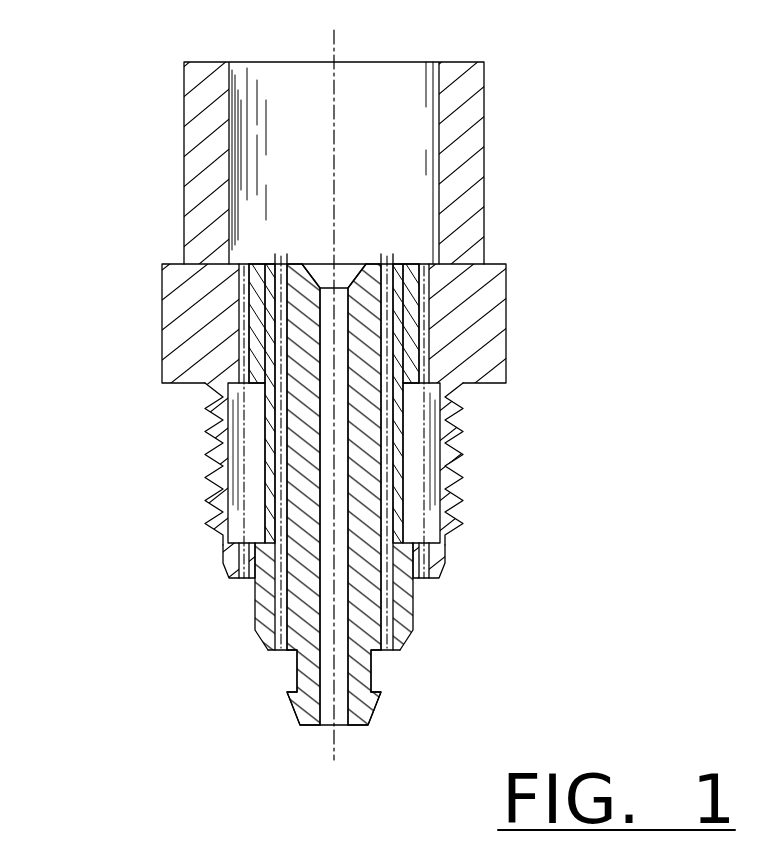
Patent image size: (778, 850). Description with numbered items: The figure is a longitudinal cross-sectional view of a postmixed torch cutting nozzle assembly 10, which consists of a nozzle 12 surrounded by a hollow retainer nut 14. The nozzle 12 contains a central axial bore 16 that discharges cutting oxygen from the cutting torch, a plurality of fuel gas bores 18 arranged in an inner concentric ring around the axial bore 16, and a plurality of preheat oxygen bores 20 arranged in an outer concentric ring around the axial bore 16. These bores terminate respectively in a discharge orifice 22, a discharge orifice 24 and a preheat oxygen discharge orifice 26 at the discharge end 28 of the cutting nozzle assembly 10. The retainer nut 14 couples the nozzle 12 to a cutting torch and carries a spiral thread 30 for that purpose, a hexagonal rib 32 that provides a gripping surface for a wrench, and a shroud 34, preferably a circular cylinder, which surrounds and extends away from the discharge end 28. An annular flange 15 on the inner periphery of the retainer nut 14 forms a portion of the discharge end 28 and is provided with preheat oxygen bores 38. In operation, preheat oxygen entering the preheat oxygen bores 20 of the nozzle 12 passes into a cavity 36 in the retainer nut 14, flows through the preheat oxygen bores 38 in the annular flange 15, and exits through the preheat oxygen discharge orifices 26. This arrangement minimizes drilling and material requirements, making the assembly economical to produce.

The cutting nozzle assembly 10 is at (527, 97).
The nozzle 12 is at (446, 572).
The hollow retainer nut 14 is at (520, 357).
The annular flange 15 is at (259, 265).
The axial bore 16 is at (340, 710).
The fuel gas bores 18 is at (282, 650).
The preheat oxygen bores 20 is at (244, 580).
The discharge orifice 22 is at (345, 275).
The discharge orifice 24 is at (388, 264).
The preheat oxygen discharge orifice 26 is at (427, 270).
The discharge end 28 is at (303, 263).
The spiral thread 30 is at (463, 487).
The hexagonal rib 32 is at (507, 283).
The shroud 34 is at (468, 93).
The cavity 36 is at (246, 445).
The preheat oxygen bores 38 is at (244, 334).